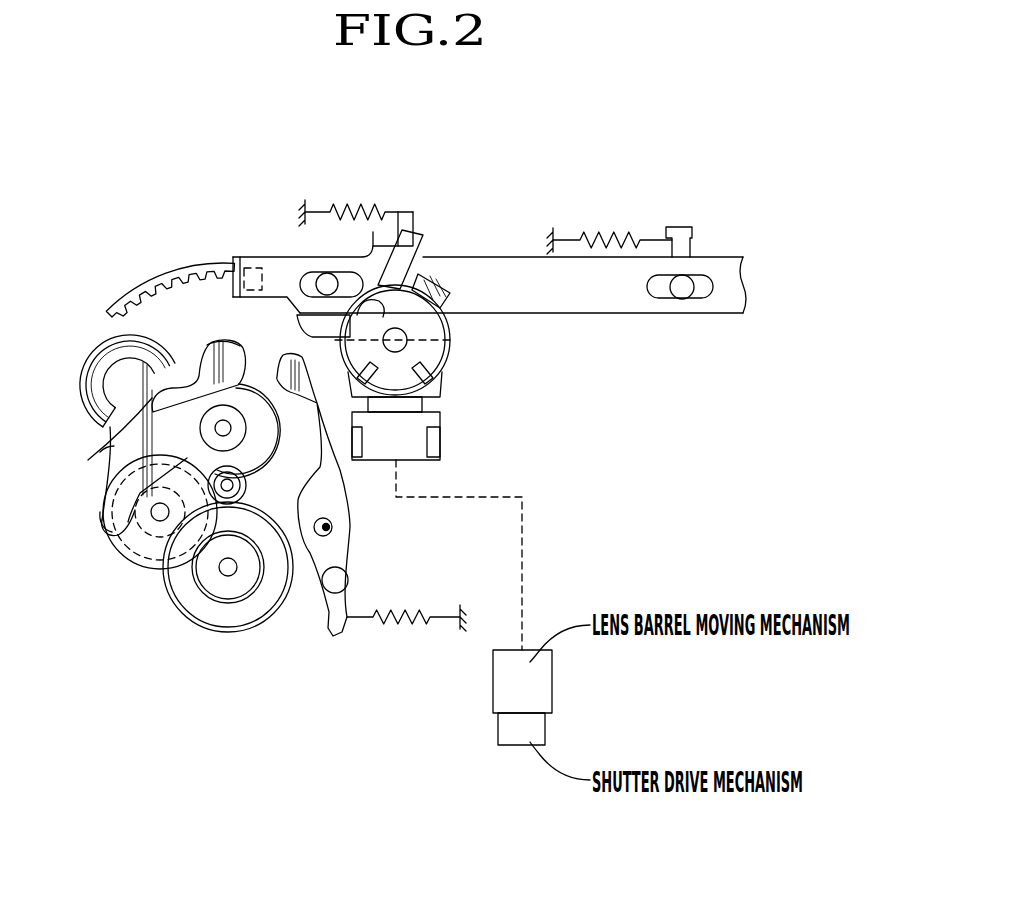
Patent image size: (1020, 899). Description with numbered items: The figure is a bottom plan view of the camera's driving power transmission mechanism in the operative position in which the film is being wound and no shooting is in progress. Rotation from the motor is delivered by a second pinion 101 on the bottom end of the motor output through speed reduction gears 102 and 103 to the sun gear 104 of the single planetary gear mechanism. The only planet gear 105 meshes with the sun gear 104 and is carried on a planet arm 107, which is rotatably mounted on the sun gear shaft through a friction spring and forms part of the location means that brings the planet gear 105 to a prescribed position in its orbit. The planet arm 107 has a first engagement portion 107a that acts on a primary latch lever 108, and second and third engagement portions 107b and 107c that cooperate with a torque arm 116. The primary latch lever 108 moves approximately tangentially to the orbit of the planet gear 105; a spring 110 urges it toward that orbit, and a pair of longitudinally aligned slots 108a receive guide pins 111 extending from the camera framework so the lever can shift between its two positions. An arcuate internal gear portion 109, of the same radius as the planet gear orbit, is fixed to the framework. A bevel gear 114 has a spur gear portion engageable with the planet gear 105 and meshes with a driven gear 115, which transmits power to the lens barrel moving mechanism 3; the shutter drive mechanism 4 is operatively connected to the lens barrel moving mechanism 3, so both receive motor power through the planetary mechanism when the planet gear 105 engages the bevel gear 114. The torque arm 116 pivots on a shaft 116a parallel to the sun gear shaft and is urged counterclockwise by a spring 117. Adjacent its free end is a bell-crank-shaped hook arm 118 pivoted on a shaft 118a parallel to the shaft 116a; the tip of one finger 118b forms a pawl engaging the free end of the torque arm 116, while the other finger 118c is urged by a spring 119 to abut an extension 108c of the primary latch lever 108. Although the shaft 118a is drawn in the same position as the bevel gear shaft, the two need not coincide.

The lens barrel moving mechanism 3 is at (553, 670).
The shutter drive mechanism 4 is at (546, 728).
The second pinion 101 is at (248, 484).
The speed reduction gear 102 is at (240, 632).
The speed reduction gear 103 is at (146, 570).
The sun gear 104 is at (272, 384).
The planet gear 105 is at (92, 362).
The planet arm 107 is at (112, 469).
The first engagement portion 107a is at (103, 534).
The second engagement portion 107b is at (205, 346).
The third engagement portion 107c is at (112, 448).
The primary latch lever 108 is at (725, 255).
The slots 108a is at (305, 280).
The extension 108c is at (398, 232).
The arcuate internal gear portion 109 is at (142, 289).
The spring 110 is at (602, 232).
The guide pins 111 is at (325, 278).
The bevel gear 114 is at (432, 376).
The driven gear 115 is at (442, 440).
The torque arm 116 is at (337, 492).
The shaft 116a is at (332, 527).
The spring 117 is at (401, 624).
The hook arm 118 is at (401, 322).
The shaft 118a is at (405, 342).
The finger 118b is at (298, 322).
The finger 118c is at (425, 238).
The spring 119 is at (352, 205).